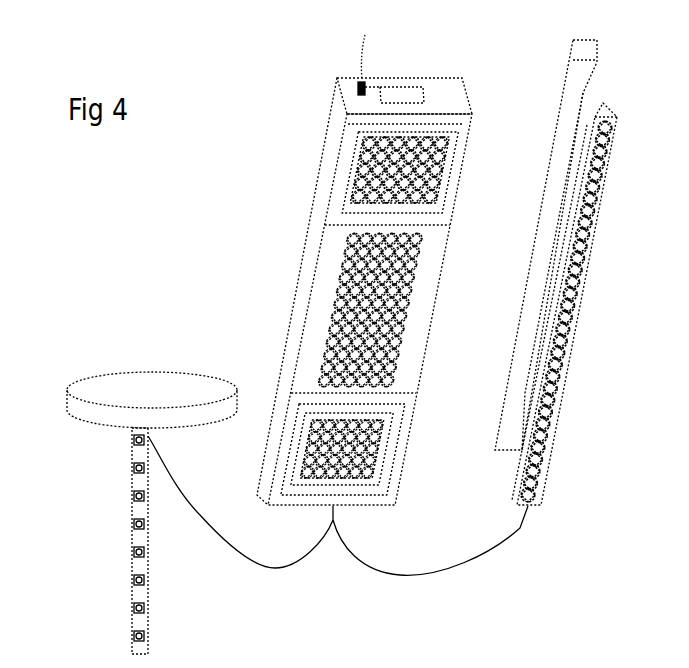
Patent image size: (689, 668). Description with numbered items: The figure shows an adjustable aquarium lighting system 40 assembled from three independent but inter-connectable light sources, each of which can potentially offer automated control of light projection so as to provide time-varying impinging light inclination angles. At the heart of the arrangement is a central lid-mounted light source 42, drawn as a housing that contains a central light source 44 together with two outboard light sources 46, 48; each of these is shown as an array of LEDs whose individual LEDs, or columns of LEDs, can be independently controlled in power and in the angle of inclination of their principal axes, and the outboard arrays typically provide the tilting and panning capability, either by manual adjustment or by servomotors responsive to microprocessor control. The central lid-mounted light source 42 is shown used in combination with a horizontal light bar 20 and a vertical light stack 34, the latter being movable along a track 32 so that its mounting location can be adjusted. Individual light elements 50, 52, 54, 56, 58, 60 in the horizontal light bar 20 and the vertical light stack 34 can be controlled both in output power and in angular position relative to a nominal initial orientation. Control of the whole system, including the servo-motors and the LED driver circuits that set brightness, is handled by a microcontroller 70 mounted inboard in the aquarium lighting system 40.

The horizontal light bar 20 is at (585, 72).
The track 32 is at (67, 388).
The vertical light stack 34 is at (148, 617).
The aquarium lighting system 40 is at (217, 92).
The central lid-mounted light source 42 is at (300, 267).
The central light source 44 is at (343, 325).
The outboard light source 46 is at (380, 450).
The outboard light source 48 is at (377, 157).
The individual light element 50 is at (139, 584).
The individual light element 52 is at (139, 551).
The individual light element 54 is at (132, 518).
The individual light element 56 is at (542, 483).
The individual light element 58 is at (557, 415).
The individual light element 60 is at (565, 348).
The microcontroller 70 is at (358, 86).